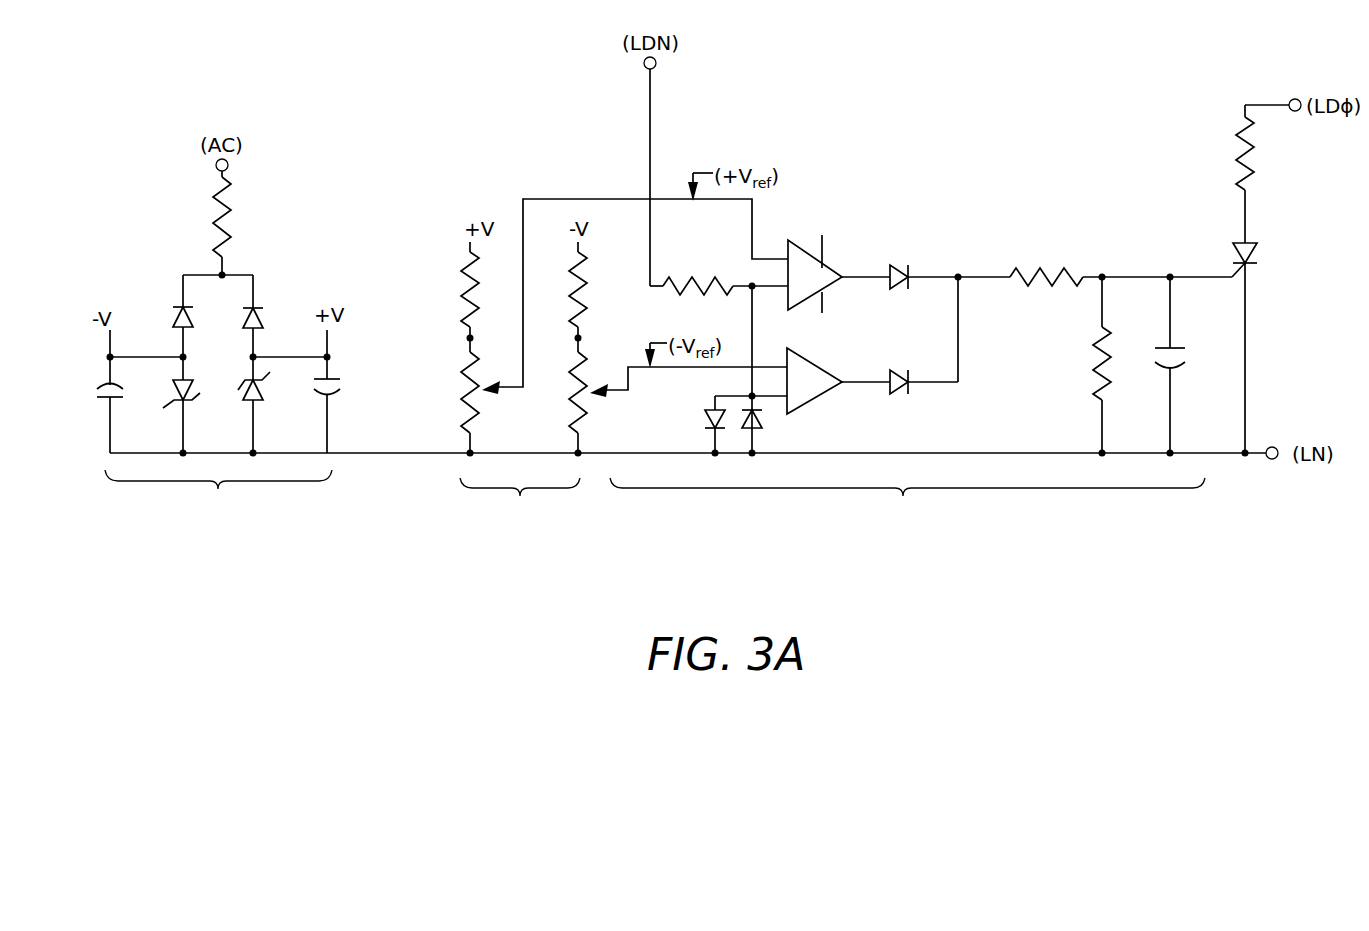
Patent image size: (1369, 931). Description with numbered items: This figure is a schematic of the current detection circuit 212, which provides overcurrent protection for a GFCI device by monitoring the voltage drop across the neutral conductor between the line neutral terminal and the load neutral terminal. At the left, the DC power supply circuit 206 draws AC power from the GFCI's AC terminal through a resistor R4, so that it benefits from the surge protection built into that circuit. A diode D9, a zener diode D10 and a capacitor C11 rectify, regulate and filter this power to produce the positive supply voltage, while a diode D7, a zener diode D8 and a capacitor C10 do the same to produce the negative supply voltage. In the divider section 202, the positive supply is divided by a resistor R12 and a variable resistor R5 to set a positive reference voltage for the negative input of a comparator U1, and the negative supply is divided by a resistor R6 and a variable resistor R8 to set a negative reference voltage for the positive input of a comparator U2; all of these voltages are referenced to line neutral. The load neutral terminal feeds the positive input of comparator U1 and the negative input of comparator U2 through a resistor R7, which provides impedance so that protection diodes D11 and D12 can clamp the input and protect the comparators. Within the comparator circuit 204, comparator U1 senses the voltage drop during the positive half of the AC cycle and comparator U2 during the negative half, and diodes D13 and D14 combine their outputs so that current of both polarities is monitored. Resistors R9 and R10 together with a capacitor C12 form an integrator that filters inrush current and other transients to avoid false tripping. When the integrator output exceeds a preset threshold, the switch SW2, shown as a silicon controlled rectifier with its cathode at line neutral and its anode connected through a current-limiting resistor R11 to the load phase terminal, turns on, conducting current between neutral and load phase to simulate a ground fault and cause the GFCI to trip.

The resistor R4 is at (230, 218).
The diode D7 is at (190, 320).
The zener diode D8 is at (184, 401).
The diode D9 is at (260, 327).
The zener diode D10 is at (256, 403).
The capacitor C10 is at (96, 388).
The capacitor C11 is at (336, 394).
The DC power supply circuit 206 is at (218, 493).
The resistor R12 is at (468, 287).
The variable resistor R5 is at (477, 405).
The resistor R6 is at (592, 281).
The variable resistor R8 is at (581, 407).
The reference voltage section 202 is at (520, 502).
The resistor R7 is at (672, 277).
The comparator U1 is at (839, 275).
The comparator U2 is at (802, 387).
The diode D11 is at (705, 421).
The diode D12 is at (756, 432).
The diode D13 is at (893, 263).
The diode D14 is at (890, 370).
The resistor R9 is at (1052, 267).
The resistor R10 is at (1095, 367).
The capacitor C12 is at (1184, 353).
The resistor R11 is at (1234, 163).
The switch SW2 is at (1258, 252).
The comparator circuit 204 is at (907, 503).
The current detection circuit 212 is at (249, 624).